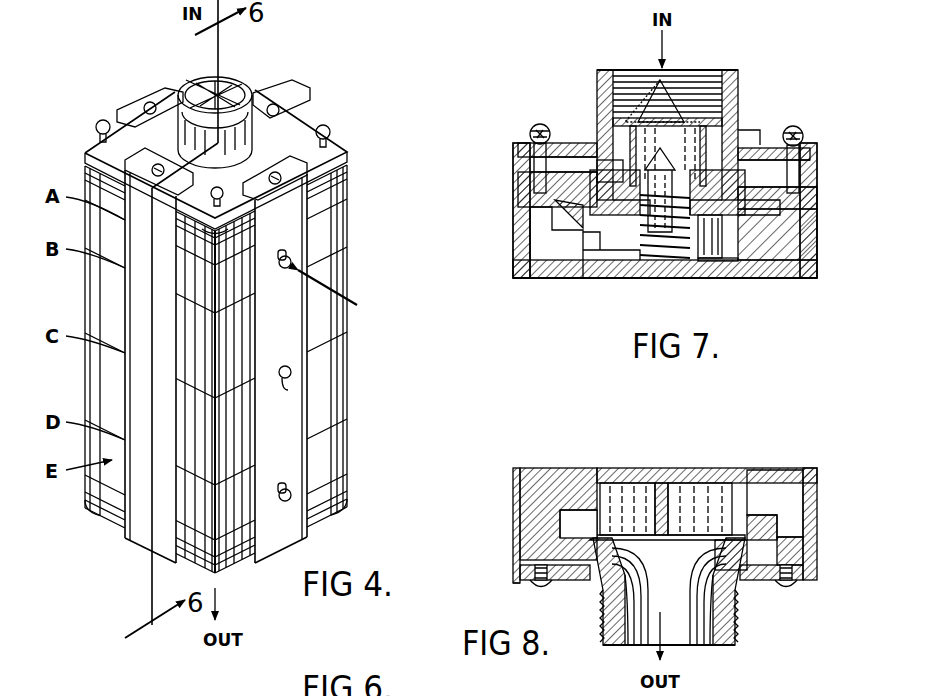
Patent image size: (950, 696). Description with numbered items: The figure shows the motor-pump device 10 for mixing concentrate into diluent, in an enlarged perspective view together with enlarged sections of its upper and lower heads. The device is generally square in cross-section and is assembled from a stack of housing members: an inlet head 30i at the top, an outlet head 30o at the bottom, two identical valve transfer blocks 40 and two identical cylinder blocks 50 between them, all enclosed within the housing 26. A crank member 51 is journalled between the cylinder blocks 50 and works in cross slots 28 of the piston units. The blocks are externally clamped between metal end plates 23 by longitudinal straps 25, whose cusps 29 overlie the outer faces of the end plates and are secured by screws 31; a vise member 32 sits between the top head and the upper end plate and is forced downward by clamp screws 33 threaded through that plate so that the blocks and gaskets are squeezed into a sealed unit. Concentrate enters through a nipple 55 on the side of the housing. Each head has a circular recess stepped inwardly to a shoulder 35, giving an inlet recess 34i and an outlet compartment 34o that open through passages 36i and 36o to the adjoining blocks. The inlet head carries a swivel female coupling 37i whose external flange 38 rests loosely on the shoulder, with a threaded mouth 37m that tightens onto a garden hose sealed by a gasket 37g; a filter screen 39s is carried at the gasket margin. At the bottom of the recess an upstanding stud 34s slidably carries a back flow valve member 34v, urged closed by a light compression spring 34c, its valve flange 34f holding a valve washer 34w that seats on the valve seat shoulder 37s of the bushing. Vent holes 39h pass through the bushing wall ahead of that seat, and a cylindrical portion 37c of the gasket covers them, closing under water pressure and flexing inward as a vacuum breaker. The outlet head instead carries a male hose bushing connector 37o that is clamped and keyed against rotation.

In FIG. 4, the motor-pump device 10 is at (234, 345).
In FIG. 4, the end plate 23 is at (340, 147).
In FIG. 7, the end plate 23 is at (812, 157).
In FIG. 4, the longitudinal strap 25 is at (298, 398).
In FIG. 7, the longitudinal strap 25 is at (518, 203).
In FIG. 8, the longitudinal strap 25 is at (513, 551).
In FIG. 4, the housing 26 is at (90, 510).
In FIG. 4, the cross slot 28 is at (287, 350).
In FIG. 7, the cusp 29 is at (516, 150).
In FIG. 4, the inlet head 30i is at (345, 192).
In FIG. 7, the inlet head 30i is at (512, 260).
In FIG. 4, the outlet head 30o is at (236, 521).
In FIG. 8, the outlet head 30o is at (645, 468).
In FIG. 4, the screw 31 is at (278, 110).
In FIG. 8, the screw 31 is at (533, 586).
In FIG. 4, the vise member 32 is at (343, 169).
In FIG. 7, the vise member 32 is at (518, 178).
In FIG. 8, the vise member 32 is at (762, 583).
In FIG. 4, the clamp screw 33 is at (96, 126).
In FIG. 7, the clamp screw 33 is at (528, 131).
In FIG. 7, the compression spring 34c is at (632, 278).
In FIG. 7, the valve flange 34f is at (705, 278).
In FIG. 7, the inlet recess 34i is at (725, 278).
In FIG. 8, the outlet compartment 34o is at (722, 538).
In FIG. 7, the stud 34s is at (650, 278).
In FIG. 7, the back flow valve member 34v is at (625, 238).
In FIG. 7, the valve washer 34w is at (620, 216).
In FIG. 7, the shoulder 35 is at (800, 210).
In FIG. 8, the shoulder 35 is at (570, 545).
In FIG. 7, the inlet passage 36i is at (582, 273).
In FIG. 8, the outlet passage 36o is at (740, 470).
In FIG. 7, the cylindrical portion 37c is at (668, 80).
In FIG. 7, the gasket 37g is at (612, 108).
In FIG. 7, the swivel female coupling 37i is at (595, 73).
In FIG. 7, the threaded mouth 37m is at (726, 70).
In FIG. 8, the male hose bushing connector 37o is at (602, 612).
In FIG. 7, the valve seat shoulder 37s is at (738, 123).
In FIG. 7, the external flange 38 is at (598, 170).
In FIG. 7, the vent hole 39h is at (530, 238).
In FIG. 7, the filter screen 39s is at (662, 117).
In FIG. 4, the valve transfer block 40 is at (340, 227).
In FIG. 4, the cylinder block 50 is at (333, 280).
In FIG. 4, the crank member 51 is at (292, 370).
In FIG. 4, the nipple 55 is at (284, 389).